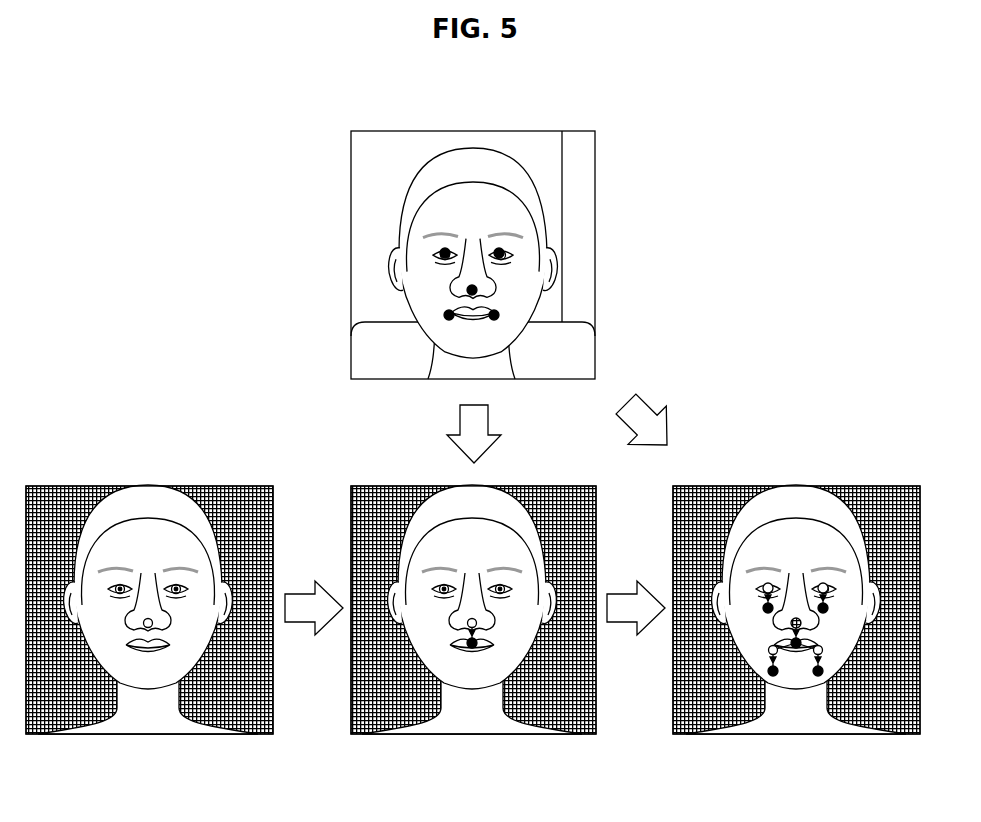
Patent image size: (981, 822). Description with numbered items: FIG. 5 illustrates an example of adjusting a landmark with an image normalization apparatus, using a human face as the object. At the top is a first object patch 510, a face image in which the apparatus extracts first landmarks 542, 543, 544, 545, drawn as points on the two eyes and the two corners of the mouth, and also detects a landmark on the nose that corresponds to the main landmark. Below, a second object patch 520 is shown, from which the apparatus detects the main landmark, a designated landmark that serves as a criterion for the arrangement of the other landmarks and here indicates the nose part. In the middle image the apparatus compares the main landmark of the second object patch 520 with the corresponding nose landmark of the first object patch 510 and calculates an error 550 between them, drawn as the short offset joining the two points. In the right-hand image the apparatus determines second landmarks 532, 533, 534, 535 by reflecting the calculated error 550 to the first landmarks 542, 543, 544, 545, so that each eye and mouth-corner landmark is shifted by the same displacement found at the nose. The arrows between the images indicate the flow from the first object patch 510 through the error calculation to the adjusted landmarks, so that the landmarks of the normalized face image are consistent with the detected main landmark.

The first object patch 510 is at (475, 131).
The second object patch 520 is at (148, 485).
The second landmark 532 is at (766, 583).
The second landmark 533 is at (825, 583).
The second landmark 534 is at (770, 654).
The second landmark 535 is at (820, 654).
The first landmark 542 is at (440, 250).
The first landmark 543 is at (505, 250).
The first landmark 544 is at (445, 314).
The first landmark 545 is at (499, 314).
The error 550 is at (466, 642).